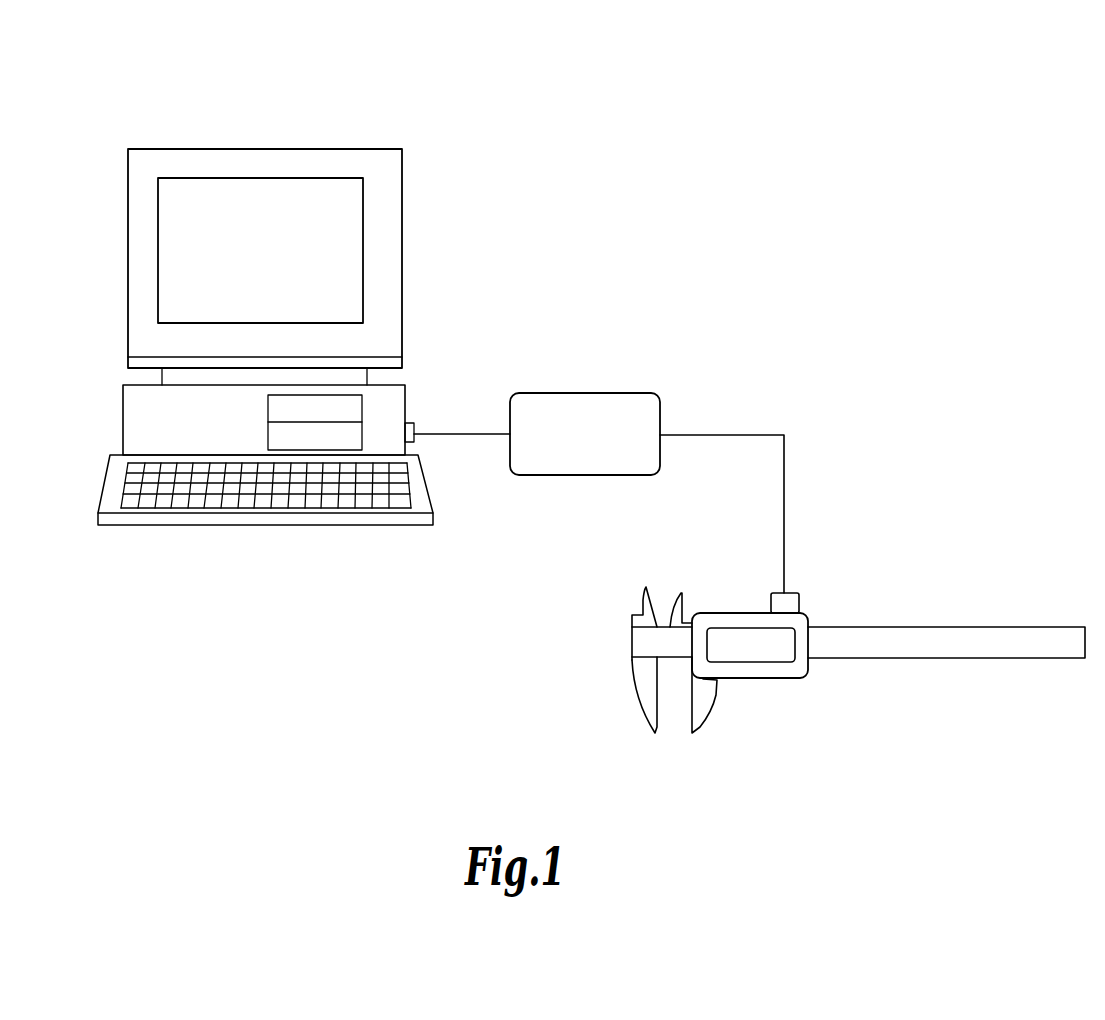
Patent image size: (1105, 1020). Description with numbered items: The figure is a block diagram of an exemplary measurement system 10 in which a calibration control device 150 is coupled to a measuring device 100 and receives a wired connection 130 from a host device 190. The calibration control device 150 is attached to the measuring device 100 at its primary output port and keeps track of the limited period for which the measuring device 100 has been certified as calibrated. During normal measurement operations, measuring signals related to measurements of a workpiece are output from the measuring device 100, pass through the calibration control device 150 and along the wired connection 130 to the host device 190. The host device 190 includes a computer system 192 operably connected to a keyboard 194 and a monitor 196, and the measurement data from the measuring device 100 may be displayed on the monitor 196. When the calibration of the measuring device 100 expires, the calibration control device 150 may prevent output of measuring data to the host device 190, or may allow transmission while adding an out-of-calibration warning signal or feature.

The measurement system 10 is at (870, 87).
The measuring device 100 is at (1011, 582).
The wired connection 130 is at (640, 393).
The calibration control device 150 is at (800, 600).
The host device 190 is at (113, 138).
The computer system 192 is at (123, 418).
The keyboard 194 is at (146, 525).
The monitor 196 is at (403, 200).